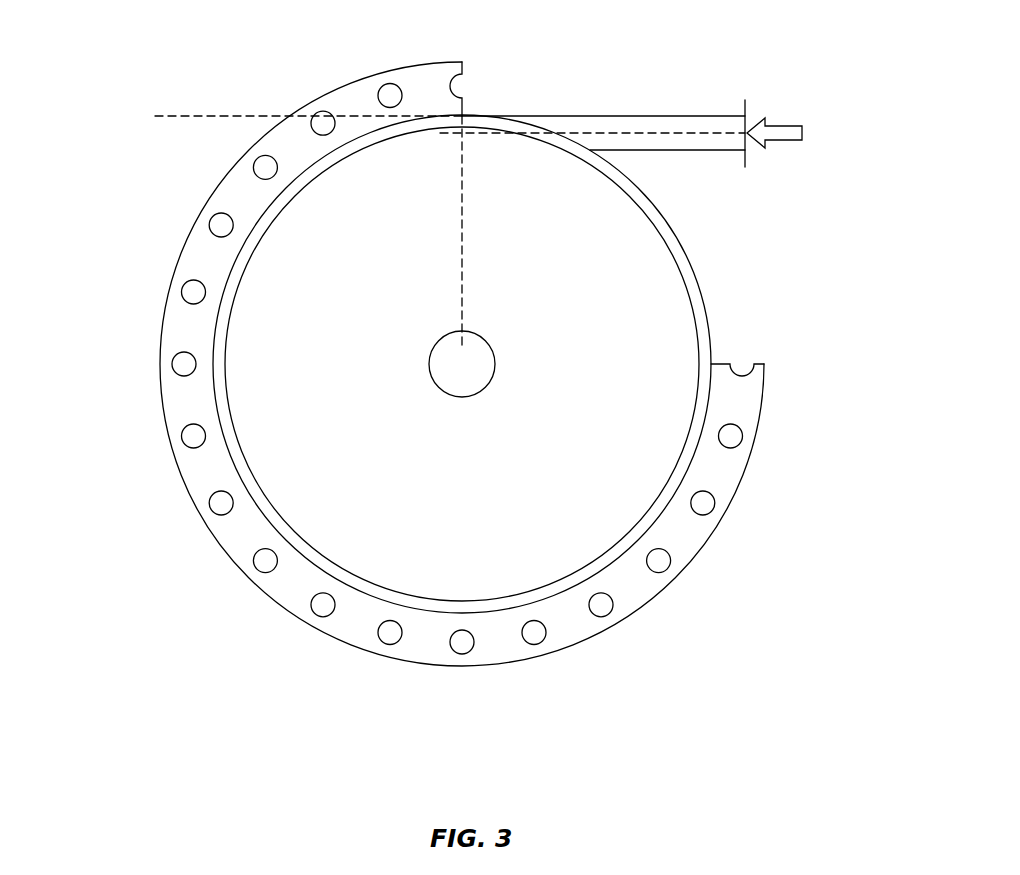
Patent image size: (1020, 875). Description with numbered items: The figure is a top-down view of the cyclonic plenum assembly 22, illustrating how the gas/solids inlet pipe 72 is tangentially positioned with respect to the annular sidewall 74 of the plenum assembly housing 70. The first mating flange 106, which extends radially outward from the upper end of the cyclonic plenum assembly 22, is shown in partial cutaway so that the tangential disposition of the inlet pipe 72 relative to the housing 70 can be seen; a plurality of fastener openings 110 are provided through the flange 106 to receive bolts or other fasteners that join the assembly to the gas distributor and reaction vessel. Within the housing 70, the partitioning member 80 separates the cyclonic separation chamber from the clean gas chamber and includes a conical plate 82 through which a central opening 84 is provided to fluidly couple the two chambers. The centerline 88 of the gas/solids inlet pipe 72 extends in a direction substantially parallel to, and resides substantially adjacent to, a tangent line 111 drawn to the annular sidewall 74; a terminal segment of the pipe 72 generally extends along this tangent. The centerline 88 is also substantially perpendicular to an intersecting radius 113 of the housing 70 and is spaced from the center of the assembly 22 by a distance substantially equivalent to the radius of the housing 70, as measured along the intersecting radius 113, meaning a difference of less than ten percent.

The cyclonic plenum assembly 22 is at (140, 163).
The plenum assembly housing 70 is at (709, 305).
The gas/solids inlet pipe 72 is at (677, 115).
The annular sidewall 74 is at (677, 239).
The partitioning member 80 is at (598, 532).
The conical plate 82 is at (552, 378).
The central opening 84 is at (479, 378).
The centerline 88 is at (598, 130).
The first mating flange 106 is at (432, 72).
The fastener openings 110 is at (387, 92).
The tangent line 111 is at (242, 114).
The intersecting radius 113 is at (458, 248).